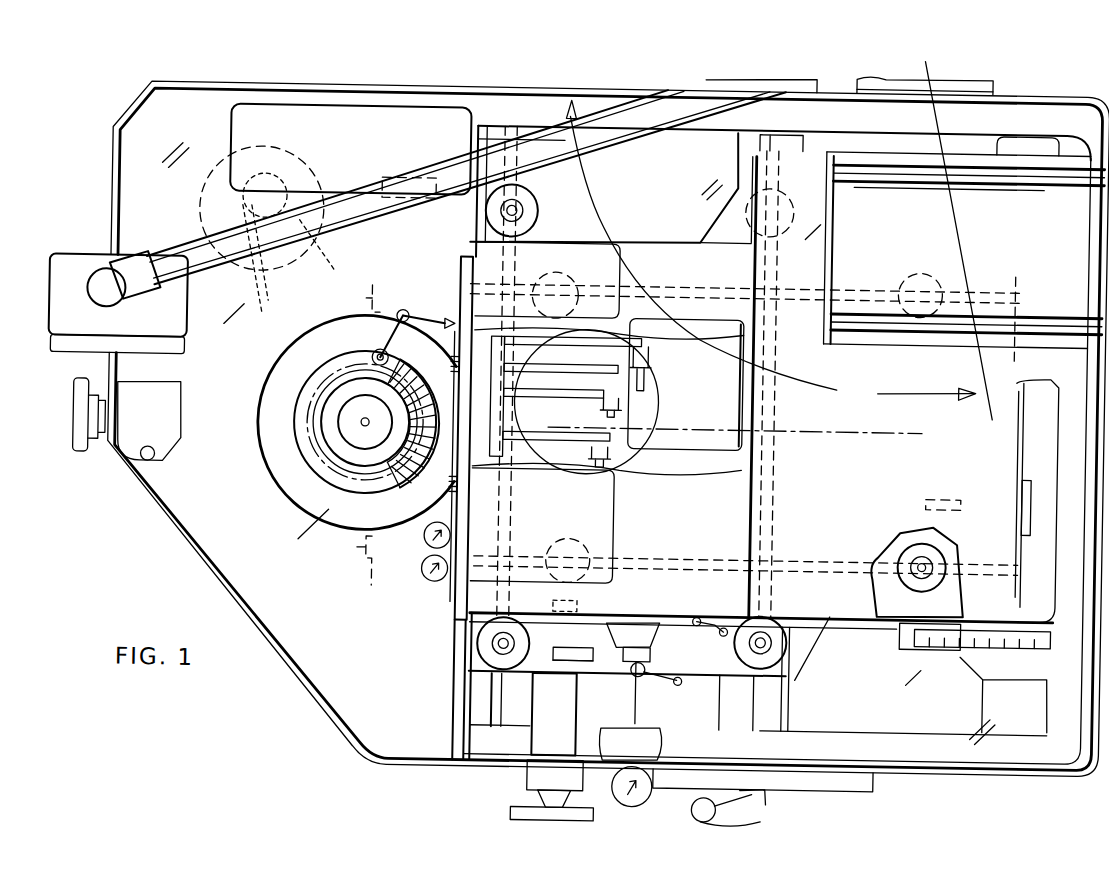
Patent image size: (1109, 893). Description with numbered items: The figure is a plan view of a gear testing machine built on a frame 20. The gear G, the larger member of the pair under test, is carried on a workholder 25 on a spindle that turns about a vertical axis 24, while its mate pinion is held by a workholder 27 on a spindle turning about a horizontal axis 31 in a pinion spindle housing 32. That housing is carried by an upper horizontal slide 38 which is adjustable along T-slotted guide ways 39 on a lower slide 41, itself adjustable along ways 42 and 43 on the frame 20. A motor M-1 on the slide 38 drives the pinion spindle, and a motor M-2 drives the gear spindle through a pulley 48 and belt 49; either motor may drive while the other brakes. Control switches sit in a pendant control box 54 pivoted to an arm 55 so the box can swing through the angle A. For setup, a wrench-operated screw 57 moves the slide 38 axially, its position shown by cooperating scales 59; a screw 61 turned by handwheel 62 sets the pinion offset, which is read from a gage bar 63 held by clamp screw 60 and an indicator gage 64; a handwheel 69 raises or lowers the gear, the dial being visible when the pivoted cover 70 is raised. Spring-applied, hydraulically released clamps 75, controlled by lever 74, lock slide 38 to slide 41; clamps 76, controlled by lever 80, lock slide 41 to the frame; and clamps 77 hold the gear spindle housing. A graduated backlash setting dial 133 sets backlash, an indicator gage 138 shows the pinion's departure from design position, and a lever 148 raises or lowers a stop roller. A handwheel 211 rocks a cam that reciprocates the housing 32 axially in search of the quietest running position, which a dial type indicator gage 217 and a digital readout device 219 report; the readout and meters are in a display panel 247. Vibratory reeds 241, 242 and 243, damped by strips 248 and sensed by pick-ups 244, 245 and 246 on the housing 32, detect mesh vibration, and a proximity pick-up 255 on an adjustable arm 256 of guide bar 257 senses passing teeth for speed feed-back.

The frame 20 is at (506, 764).
The vertical axis 24 is at (362, 425).
The workholder 25 is at (356, 444).
The workholder 27 is at (443, 433).
The horizontal axis 31 is at (855, 428).
The pinion spindle housing 32 is at (520, 451).
The horizontal slide 38 is at (610, 373).
The T-slotted guide ways 39 is at (857, 296).
The horizontal slide 41 is at (830, 634).
The ways 42 is at (508, 725).
The ways 43 is at (998, 701).
The pulley 48 is at (338, 273).
The belt 49 is at (263, 294).
The pendant control box 54 is at (158, 326).
The arm 55 is at (684, 113).
The wrench-operated screw 57 is at (985, 498).
The cooperating scales 59 is at (964, 641).
The clamp screw 60 is at (659, 679).
The screw 61 is at (563, 603).
The handwheel 62 is at (534, 811).
The gage bar 63 is at (663, 761).
The indicator gage 64 is at (648, 794).
The handwheel 69 is at (86, 449).
The pivoted cover 70 is at (150, 438).
The lever 74 is at (907, 628).
The clamps 75 is at (553, 286).
The clamps 76 is at (530, 203).
The clamps 77 is at (364, 304).
The lever 80 is at (767, 817).
The graduated backlash setting dial 133 is at (628, 648).
The indicator gage 138 is at (424, 576).
The lever 148 is at (711, 628).
The handwheel 211 is at (614, 652).
The dial type indicator gage 217 is at (426, 543).
The digital readout device 219 is at (396, 181).
The thin steel bar 241 is at (645, 350).
The thin steel bar 242 is at (552, 392).
The thin steel bar 243 is at (543, 438).
The electro-magnetic vibration measuring pick-up 244 is at (650, 377).
The electro-magnetic vibration measuring pick-up 245 is at (622, 401).
The electro-magnetic vibration measuring pick-up 246 is at (617, 452).
The display panel 247 is at (350, 149).
The strips of visco-elastic damping material 248 is at (558, 351).
The proximity pick-up 255 is at (376, 354).
The adjustable arm 256 is at (440, 319).
The guide bar 257 is at (455, 275).
The angle A is at (770, 254).
The gear G is at (412, 496).
The motor M-1 is at (964, 250).
The motor M-2 is at (198, 198).